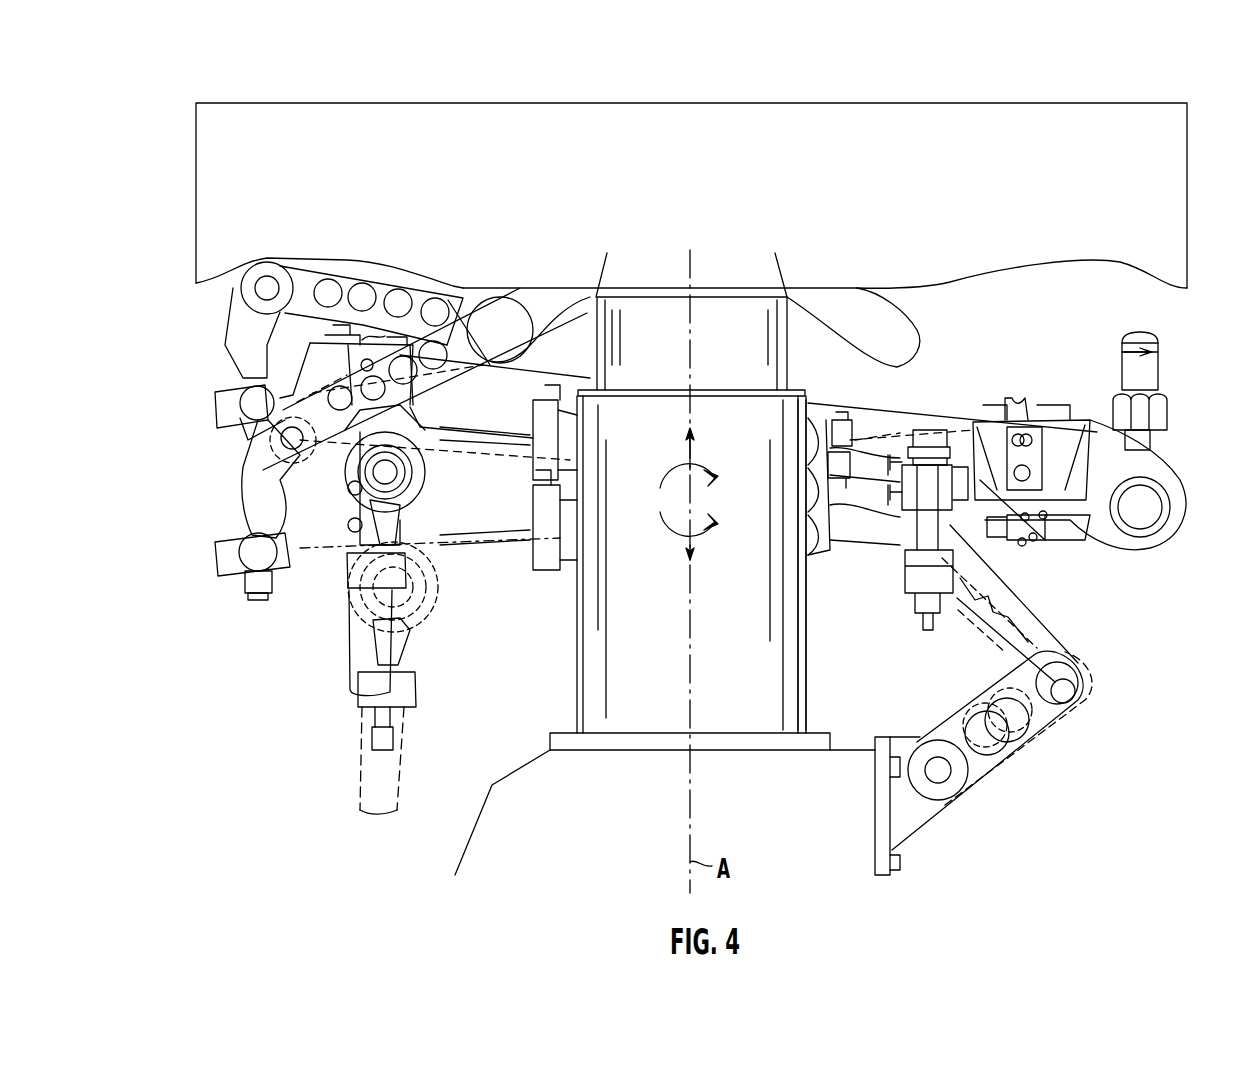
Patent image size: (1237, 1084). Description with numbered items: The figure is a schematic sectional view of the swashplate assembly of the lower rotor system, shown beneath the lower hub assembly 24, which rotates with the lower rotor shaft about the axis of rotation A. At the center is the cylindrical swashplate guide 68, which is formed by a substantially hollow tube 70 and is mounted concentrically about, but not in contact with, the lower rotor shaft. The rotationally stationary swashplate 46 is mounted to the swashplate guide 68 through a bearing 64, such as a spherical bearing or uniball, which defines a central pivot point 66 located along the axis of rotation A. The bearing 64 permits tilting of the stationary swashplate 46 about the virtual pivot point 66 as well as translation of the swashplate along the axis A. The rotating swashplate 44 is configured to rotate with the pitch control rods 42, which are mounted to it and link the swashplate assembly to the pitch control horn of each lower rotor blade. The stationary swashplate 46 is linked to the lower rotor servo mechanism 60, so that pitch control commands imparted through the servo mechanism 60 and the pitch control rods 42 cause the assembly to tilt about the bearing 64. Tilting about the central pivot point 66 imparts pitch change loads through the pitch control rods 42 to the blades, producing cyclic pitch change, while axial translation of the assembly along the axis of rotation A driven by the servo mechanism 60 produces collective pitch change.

The lower hub assembly 24 is at (718, 125).
The pitch control rod 42 is at (1135, 379).
The rotating swashplate 44 is at (1082, 493).
The stationary swashplate 46 is at (985, 484).
The lower rotor servo mechanism 60 is at (375, 773).
The bearing 64 is at (810, 419).
The central pivot point 66 is at (690, 500).
The cylindrical swashplate guide 68 is at (592, 651).
The tube 70 is at (770, 661).